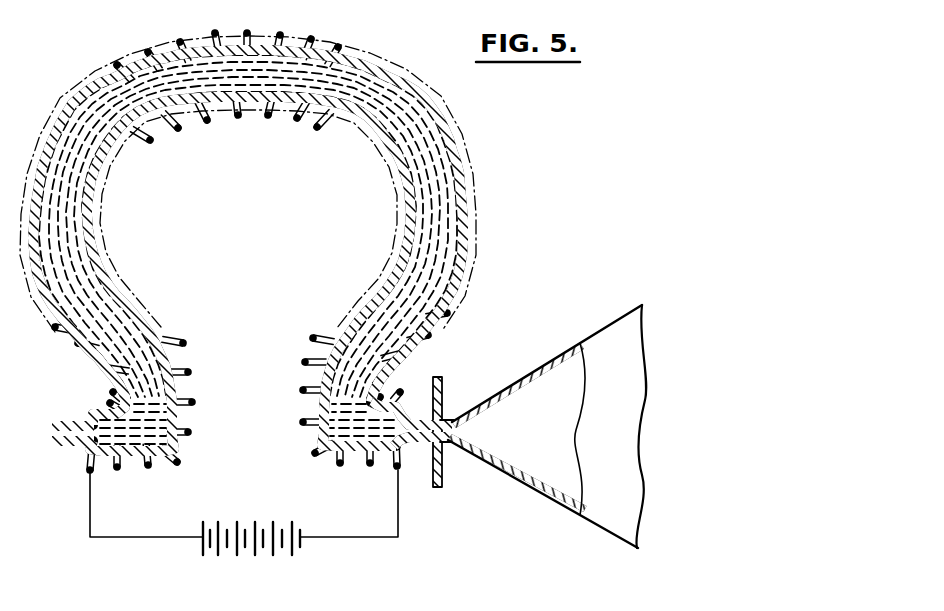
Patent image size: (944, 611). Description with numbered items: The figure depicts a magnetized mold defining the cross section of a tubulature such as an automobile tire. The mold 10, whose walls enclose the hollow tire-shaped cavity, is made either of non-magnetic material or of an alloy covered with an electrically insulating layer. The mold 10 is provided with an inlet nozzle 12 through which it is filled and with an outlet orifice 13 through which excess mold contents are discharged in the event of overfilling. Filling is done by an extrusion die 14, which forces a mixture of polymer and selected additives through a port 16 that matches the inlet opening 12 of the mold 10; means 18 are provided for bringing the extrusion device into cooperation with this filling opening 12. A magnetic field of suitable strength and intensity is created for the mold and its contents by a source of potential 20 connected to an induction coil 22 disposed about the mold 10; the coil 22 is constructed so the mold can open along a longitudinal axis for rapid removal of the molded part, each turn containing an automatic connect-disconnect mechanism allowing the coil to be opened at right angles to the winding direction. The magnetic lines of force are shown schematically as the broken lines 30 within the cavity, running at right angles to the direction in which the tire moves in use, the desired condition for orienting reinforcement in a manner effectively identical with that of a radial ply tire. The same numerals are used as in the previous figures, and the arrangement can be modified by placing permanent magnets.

The mold 10 is at (467, 200).
The inlet nozzle 12 is at (420, 405).
The outlet orifice 13 is at (63, 425).
The extrusion die 14 is at (500, 390).
The port 16 is at (452, 419).
The means for bringing the extrusion device into cooperation with the filling openin 18 is at (443, 389).
The source of potential 20 is at (340, 538).
The induction coil 22 is at (341, 48).
The magnetic lines of force 30 is at (423, 143).